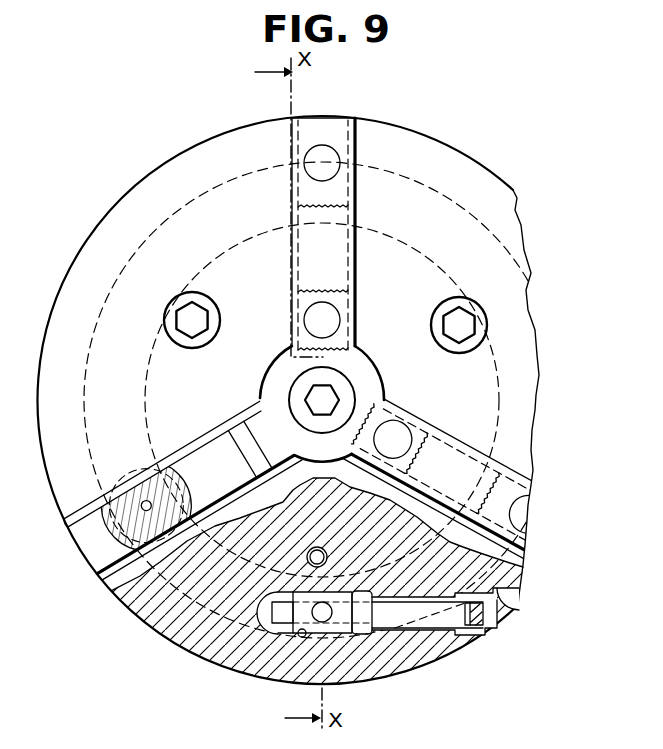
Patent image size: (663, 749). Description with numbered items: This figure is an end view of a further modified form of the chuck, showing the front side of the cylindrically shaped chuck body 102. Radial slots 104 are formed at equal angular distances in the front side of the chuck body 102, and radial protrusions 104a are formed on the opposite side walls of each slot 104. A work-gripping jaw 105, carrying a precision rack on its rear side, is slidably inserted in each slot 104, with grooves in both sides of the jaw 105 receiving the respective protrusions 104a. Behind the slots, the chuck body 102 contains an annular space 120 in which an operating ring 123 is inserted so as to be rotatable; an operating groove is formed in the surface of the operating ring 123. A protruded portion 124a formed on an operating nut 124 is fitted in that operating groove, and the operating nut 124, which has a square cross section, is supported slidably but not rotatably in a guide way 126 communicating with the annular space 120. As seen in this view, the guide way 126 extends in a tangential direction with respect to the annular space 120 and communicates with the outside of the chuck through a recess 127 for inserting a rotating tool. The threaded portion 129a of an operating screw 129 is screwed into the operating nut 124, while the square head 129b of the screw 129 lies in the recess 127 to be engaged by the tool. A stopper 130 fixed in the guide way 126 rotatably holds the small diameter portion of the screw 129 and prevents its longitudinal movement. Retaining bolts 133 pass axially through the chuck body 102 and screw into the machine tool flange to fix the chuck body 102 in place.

The chuck body 102 is at (410, 150).
The radial slot 104 is at (292, 117).
The radial protrusion 104a is at (355, 118).
The work-gripping jaw 105 is at (336, 191).
The annular space 120 is at (150, 623).
The operating ring 123 is at (140, 386).
The operating nut 124 is at (345, 634).
The protruded portion 124a is at (312, 640).
The guide way 126 is at (290, 636).
The recess 127 is at (517, 606).
The operating screw 129 is at (432, 630).
The threaded portion 129a is at (258, 636).
The square head 129b is at (482, 628).
The stopper 130 is at (380, 636).
The retaining bolt 133 is at (197, 318).